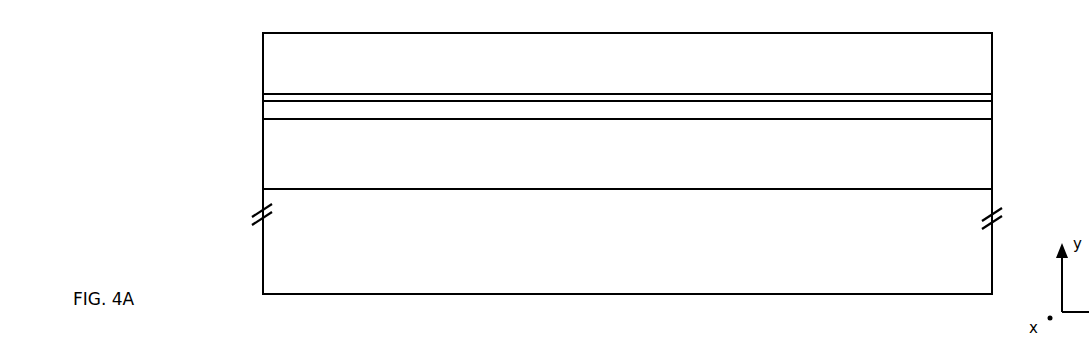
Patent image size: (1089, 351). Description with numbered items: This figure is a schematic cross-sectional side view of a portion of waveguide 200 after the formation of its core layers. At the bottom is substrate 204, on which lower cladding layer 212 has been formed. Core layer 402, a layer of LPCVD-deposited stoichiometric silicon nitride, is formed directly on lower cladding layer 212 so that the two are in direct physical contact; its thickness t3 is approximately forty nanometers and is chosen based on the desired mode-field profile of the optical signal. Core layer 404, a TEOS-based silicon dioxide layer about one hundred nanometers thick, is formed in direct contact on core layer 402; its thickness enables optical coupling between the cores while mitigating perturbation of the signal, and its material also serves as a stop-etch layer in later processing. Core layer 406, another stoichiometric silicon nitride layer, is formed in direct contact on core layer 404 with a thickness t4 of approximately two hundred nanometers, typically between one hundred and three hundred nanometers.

The waveguide 200 is at (170, 56).
The substrate 204 is at (972, 282).
The lower cladding layer 212 is at (972, 175).
The core layer 402 is at (263, 111).
The core layer 404 is at (992, 98).
The core layer 406 is at (972, 82).
The thickness of core layer 402 t3 is at (384, 155).
The thickness of core layer 406 t4 is at (749, 40).